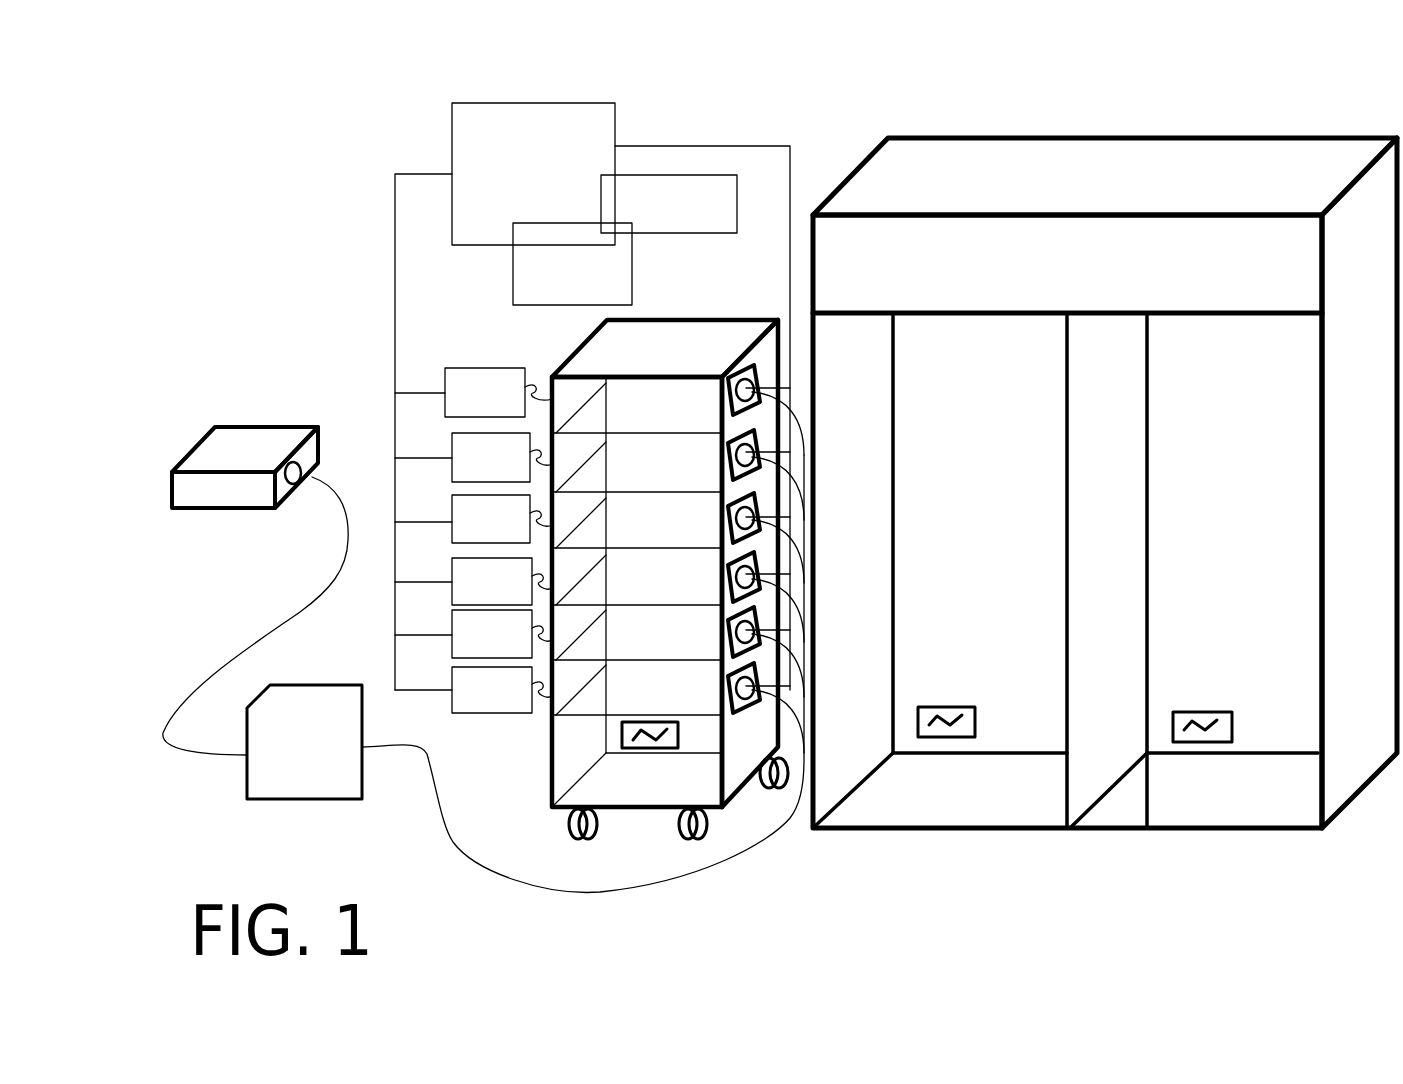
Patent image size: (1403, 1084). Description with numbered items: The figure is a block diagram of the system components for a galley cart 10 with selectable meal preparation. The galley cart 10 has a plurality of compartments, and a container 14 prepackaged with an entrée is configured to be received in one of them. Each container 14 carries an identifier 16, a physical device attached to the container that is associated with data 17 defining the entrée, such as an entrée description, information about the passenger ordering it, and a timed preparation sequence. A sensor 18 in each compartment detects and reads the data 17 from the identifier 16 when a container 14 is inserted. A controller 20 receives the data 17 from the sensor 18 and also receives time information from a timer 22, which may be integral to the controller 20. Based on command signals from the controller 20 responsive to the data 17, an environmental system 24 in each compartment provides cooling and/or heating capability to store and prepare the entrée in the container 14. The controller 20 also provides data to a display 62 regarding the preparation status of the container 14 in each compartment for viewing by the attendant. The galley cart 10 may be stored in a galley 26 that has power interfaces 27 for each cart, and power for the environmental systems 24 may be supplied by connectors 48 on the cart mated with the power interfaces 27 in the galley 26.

The galley cart 10 is at (655, 297).
The container 14 is at (218, 497).
The identifier 16 is at (303, 473).
The data 17 is at (247, 773).
The sensor 18 is at (753, 364).
The controller 20 is at (503, 103).
The timer 22 is at (653, 175).
The environmental system 24 is at (503, 368).
The galley 26 is at (1012, 163).
The power interfaces 27 is at (937, 707).
The connectors 48 is at (645, 750).
The display 62 is at (513, 276).